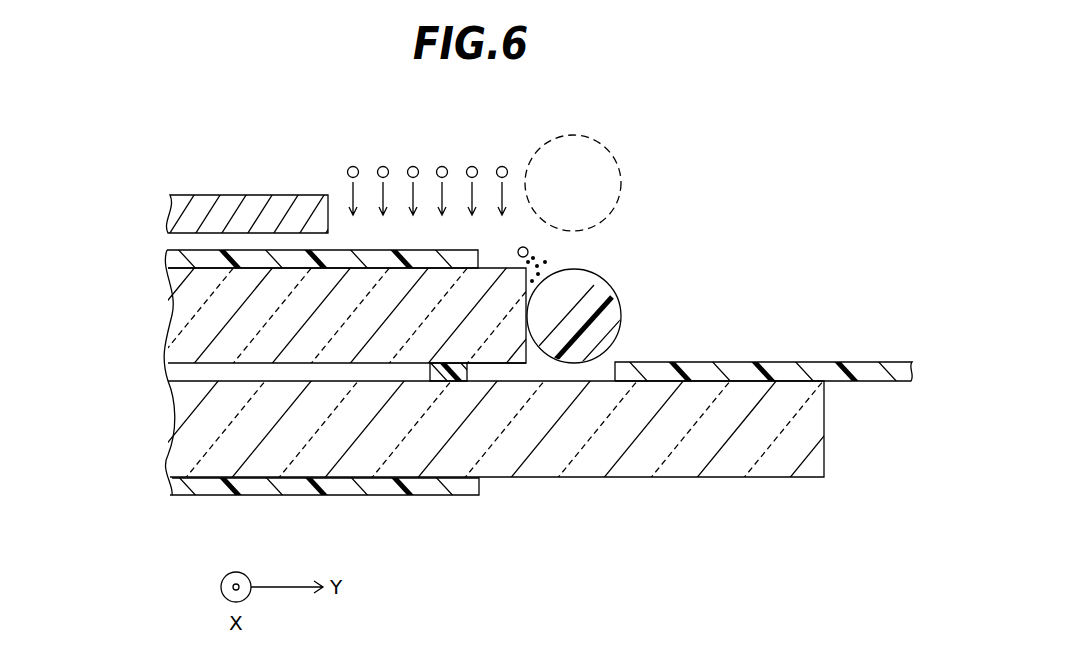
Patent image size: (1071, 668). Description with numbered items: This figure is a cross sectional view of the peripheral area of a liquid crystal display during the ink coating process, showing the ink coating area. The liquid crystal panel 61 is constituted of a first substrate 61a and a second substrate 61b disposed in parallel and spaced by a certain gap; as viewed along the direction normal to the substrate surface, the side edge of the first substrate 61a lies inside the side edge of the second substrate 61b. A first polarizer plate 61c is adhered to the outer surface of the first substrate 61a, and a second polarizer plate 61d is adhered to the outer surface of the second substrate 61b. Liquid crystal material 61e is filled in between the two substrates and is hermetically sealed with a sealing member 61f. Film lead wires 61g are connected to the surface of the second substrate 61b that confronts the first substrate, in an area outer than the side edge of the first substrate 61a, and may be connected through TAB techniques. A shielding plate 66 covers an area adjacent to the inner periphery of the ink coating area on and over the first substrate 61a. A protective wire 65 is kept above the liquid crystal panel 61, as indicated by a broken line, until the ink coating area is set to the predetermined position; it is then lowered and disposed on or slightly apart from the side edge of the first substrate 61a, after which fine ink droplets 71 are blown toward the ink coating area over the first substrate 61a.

The liquid crystal panel 61 is at (84, 245).
The first substrate 61a is at (170, 328).
The second substrate 61b is at (170, 443).
The first polarizer plate 61c is at (166, 265).
The second polarizer plate 61d is at (172, 488).
The liquid crystal material 61e is at (168, 380).
The sealing member 61f is at (470, 369).
The film lead wires 61g is at (830, 362).
The protective wire 65 is at (617, 292).
The shielding plate 66 is at (170, 215).
The fine ink droplets 71 is at (413, 166).